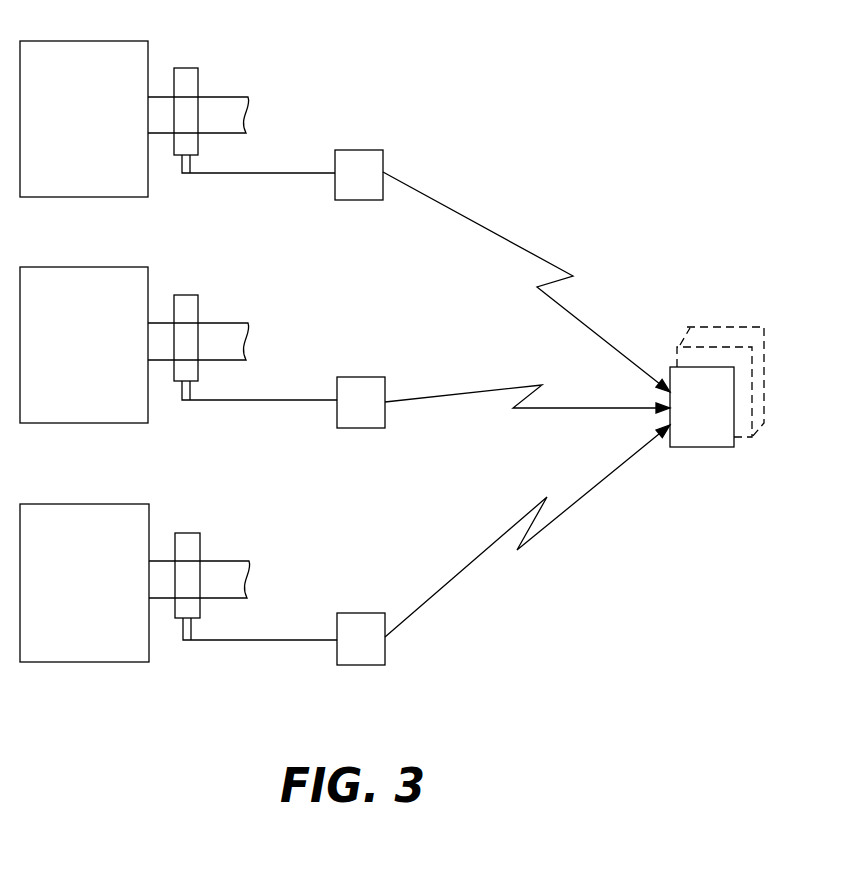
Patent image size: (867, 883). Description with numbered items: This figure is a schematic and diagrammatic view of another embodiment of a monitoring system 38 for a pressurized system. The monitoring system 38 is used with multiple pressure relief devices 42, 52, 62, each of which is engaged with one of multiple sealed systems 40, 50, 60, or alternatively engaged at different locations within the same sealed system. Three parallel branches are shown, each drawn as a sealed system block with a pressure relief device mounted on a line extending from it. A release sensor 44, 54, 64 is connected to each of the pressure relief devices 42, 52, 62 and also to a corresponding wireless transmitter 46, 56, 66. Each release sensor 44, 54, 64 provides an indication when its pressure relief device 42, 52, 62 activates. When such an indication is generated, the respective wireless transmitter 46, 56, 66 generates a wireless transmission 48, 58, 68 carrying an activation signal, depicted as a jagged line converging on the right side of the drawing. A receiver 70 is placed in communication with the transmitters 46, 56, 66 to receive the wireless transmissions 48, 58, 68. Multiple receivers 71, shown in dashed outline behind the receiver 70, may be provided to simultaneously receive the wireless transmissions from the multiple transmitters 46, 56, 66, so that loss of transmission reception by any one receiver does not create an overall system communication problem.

The monitoring system 38 is at (560, 122).
The sealed system 40 is at (70, 127).
The pressure relief device 42 is at (185, 78).
The release sensor 44 is at (182, 160).
The wireless transmitter 46 is at (345, 189).
The wireless transmission 48 is at (470, 220).
The sealed system 50 is at (70, 359).
The pressure relief device 52 is at (188, 307).
The release sensor 54 is at (182, 388).
The wireless transmitter 56 is at (347, 416).
The wireless transmission 58 is at (460, 390).
The sealed system 60 is at (70, 597).
The pressure relief device 62 is at (187, 545).
The release sensor 64 is at (183, 626).
The wireless transmitter 66 is at (347, 653).
The wireless transmission 68 is at (458, 572).
The receiver 70 is at (688, 421).
The multiple receivers 71 is at (722, 357).